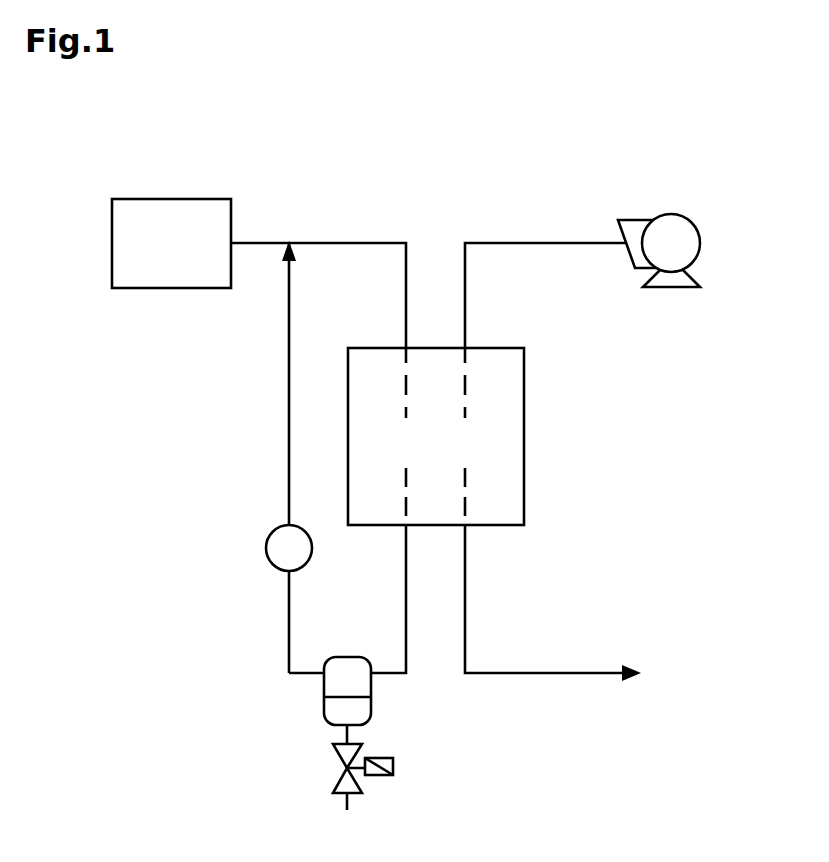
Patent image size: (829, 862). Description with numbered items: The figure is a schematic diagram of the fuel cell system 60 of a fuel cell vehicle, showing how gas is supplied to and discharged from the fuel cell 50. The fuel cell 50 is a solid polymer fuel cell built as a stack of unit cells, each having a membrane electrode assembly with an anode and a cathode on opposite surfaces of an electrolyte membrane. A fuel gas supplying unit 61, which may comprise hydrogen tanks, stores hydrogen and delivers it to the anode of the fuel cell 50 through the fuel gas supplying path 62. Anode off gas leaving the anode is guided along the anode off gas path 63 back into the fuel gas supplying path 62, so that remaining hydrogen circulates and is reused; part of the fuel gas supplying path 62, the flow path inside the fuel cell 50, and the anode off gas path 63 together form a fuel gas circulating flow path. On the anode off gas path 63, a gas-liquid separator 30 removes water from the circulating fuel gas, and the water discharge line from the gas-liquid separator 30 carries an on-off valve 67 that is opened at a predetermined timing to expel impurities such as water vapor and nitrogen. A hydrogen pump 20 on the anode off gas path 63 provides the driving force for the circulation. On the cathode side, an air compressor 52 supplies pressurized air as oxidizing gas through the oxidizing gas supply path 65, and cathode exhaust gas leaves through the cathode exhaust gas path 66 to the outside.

The hydrogen pump 20 is at (266, 549).
The gas-liquid separator 30 is at (324, 693).
The fuel cell 50 is at (525, 372).
The air compressor 52 is at (700, 243).
The fuel cell system 60 is at (434, 195).
The fuel gas supplying unit 61 is at (172, 288).
The fuel gas supplying path 62 is at (345, 243).
The anode off gas path 63 is at (289, 432).
The oxidizing gas supply path 65 is at (523, 243).
The cathode exhaust gas path 66 is at (583, 674).
The on-off valve 67 is at (380, 775).